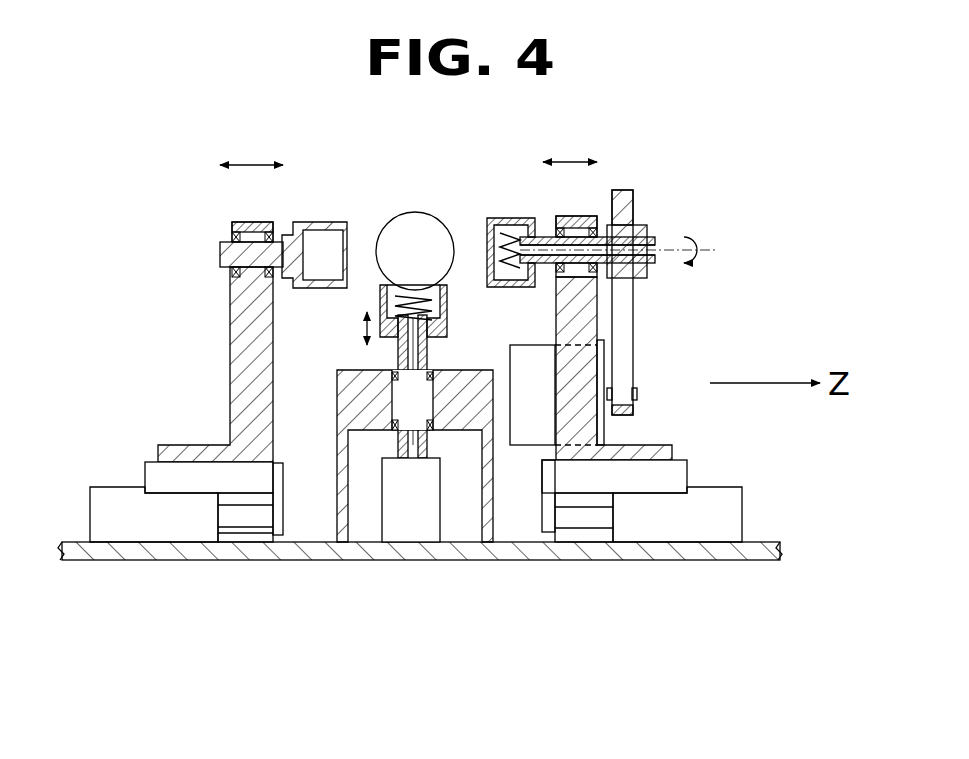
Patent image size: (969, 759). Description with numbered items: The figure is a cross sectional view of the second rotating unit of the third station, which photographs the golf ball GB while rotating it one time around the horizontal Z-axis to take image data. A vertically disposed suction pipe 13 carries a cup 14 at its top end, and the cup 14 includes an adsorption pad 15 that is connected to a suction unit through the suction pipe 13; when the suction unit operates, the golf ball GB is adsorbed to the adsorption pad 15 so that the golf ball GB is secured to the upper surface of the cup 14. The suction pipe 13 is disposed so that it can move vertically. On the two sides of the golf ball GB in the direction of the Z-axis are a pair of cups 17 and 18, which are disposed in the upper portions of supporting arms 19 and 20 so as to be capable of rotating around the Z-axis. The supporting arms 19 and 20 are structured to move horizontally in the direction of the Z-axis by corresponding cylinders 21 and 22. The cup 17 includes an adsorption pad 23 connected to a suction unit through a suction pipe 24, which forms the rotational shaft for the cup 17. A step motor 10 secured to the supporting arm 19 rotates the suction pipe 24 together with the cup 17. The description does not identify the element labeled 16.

The step motor 10 is at (528, 447).
The suction pipe 13 is at (427, 351).
The cup 14 is at (447, 297).
The adsorption pad 15 is at (447, 312).
The motor 16 is at (413, 520).
The cup 17 is at (492, 218).
The cup 18 is at (327, 220).
The supporting arm 19 is at (604, 326).
The supporting arm 20 is at (230, 322).
The cylinder 21 is at (745, 513).
The cylinder 22 is at (90, 513).
The adsorption pad 23 is at (520, 224).
The suction pipe 24 is at (655, 242).
The golf ball GB is at (415, 212).